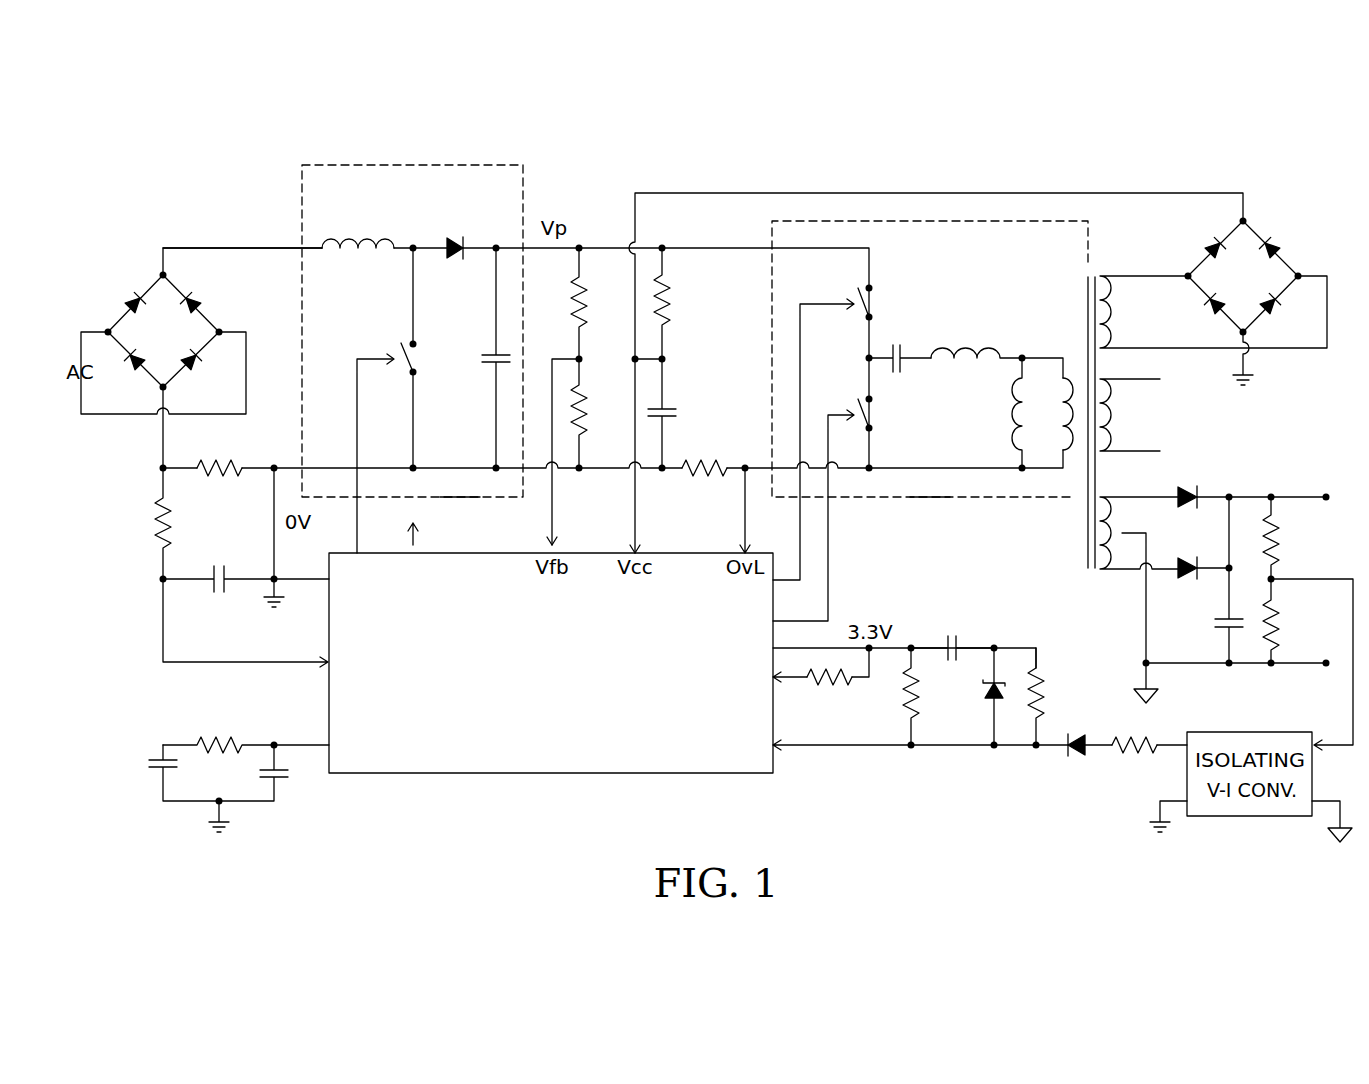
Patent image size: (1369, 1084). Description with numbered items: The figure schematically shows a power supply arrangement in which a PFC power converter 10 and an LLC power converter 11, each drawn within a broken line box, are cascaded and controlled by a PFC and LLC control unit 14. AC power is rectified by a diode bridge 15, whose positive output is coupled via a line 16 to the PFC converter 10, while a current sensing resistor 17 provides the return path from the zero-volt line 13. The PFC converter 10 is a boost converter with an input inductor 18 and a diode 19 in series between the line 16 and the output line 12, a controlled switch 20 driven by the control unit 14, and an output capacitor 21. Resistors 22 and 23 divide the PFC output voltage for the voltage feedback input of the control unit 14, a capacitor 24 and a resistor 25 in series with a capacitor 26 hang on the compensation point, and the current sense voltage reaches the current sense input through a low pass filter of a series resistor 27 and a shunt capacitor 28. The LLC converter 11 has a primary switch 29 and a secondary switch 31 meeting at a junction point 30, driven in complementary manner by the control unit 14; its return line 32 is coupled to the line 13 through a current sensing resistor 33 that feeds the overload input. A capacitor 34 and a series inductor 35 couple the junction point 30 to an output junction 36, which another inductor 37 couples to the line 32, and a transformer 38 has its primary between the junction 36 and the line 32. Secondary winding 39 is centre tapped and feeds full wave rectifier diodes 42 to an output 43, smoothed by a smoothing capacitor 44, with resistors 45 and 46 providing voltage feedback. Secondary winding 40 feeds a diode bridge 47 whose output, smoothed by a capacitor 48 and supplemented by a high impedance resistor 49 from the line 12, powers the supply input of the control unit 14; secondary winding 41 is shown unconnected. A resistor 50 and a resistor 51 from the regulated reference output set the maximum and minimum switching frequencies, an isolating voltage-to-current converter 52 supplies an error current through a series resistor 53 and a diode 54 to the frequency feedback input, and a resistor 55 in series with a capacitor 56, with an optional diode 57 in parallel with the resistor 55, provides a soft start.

The PFC power converter 10 is at (401, 231).
The LLC power converter 11 is at (968, 287).
The line 12 is at (607, 241).
The zero-volt line 13 is at (463, 489).
The PFC and LLC control unit 14 is at (539, 694).
The diode bridge 15 is at (153, 341).
The line 16 is at (225, 245).
The current sensing resistor 17 is at (222, 487).
The input inductor 18 is at (358, 267).
The diode 19 is at (457, 258).
The controlled switch 20 is at (394, 350).
The output capacitor 21 is at (482, 360).
The resistor 22 is at (570, 304).
The resistor 23 is at (588, 420).
The capacitor 24 is at (285, 781).
The resistor 25 is at (222, 731).
The capacitor 26 is at (148, 774).
The series resistor 27 is at (152, 526).
The shunt capacitor 28 is at (219, 598).
The primary switch 29 is at (863, 299).
The junction point 30 is at (865, 355).
The secondary switch 31 is at (865, 411).
The line 32 is at (934, 487).
The current sensing resistor 33 is at (707, 487).
The capacitor 34 is at (902, 374).
The series inductor 35 is at (938, 340).
The output junction 36 is at (1024, 346).
The inductor 37 is at (1010, 426).
The transformer 38 is at (1068, 489).
The secondary winding 39 is at (1110, 574).
The secondary winding 40 is at (1124, 305).
The secondary winding 41 is at (1124, 402).
The full wave rectifier diodes 42 is at (1176, 541).
The output 43 is at (1320, 494).
The smoothing capacitor 44 is at (1213, 623).
The resistor 45 is at (1277, 536).
The resistor 46 is at (1277, 621).
The diode bridge 47 is at (1231, 287).
The capacitor 48 is at (676, 416).
The high impedance resistor 49 is at (670, 308).
The resistor 50 is at (826, 683).
The resistor 51 is at (906, 696).
The electrically isolating voltage-to-current converter 52 is at (1243, 731).
The series resistor 53 is at (1121, 760).
The diode 54 is at (1065, 760).
The resistor 55 is at (1046, 686).
The capacitor 56 is at (950, 633).
The diode 57 is at (987, 692).